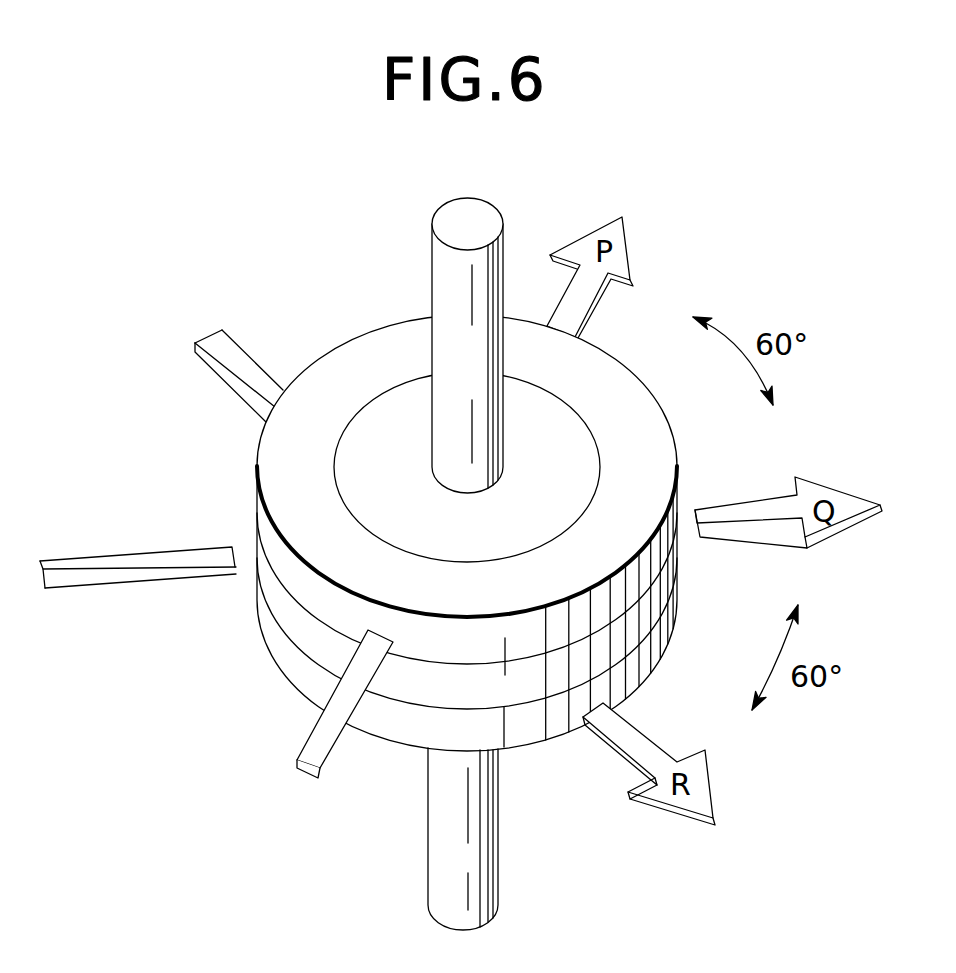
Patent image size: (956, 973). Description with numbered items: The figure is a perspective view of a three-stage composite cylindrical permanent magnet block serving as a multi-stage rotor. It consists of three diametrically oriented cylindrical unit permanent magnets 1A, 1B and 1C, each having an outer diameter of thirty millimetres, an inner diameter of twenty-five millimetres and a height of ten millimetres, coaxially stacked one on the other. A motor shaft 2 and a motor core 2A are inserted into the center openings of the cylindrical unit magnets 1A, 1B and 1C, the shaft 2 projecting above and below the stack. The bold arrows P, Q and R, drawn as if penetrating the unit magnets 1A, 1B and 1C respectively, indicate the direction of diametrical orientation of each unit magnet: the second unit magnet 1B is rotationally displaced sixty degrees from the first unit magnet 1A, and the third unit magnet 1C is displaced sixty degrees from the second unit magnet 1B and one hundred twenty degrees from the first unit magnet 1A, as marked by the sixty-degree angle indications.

The motor core 2A is at (348, 453).
The first diametrically oriented cylindrical unit permanent magnet 1A is at (302, 577).
The second diametrically oriented cylindrical unit permanent magnet 1B is at (305, 623).
The third diametrically oriented cylindrical unit permanent magnet 1C is at (305, 680).
The motor shaft 2 is at (487, 872).